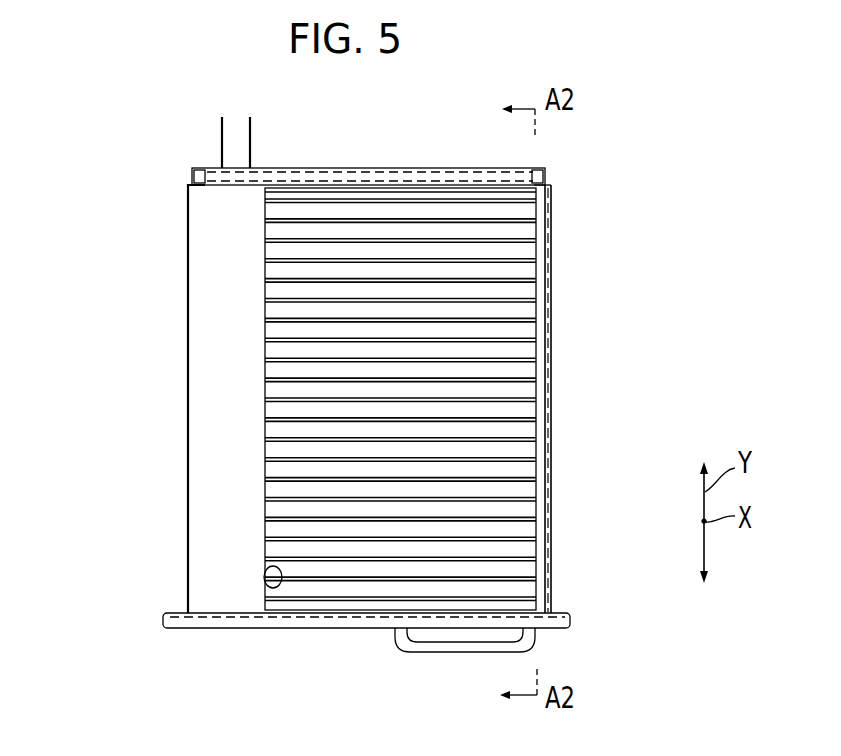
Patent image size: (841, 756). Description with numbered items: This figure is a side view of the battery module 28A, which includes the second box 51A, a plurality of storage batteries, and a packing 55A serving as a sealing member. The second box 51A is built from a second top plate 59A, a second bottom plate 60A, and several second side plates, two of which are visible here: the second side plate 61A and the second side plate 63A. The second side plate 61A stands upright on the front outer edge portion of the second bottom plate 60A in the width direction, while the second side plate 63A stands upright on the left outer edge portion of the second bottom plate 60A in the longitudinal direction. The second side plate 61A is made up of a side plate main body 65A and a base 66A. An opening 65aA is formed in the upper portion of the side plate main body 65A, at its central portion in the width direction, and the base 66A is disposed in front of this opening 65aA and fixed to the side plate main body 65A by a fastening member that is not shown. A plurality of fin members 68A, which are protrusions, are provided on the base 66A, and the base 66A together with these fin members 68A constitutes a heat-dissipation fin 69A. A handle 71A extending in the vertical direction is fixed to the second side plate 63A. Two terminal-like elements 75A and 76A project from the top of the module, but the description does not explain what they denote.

The battery module 28A is at (165, 165).
The second box 51A is at (563, 181).
The packing (sealing member) 55A is at (536, 172).
The second top plate 59A is at (551, 253).
The second bottom plate 60A is at (187, 313).
The second side plate 61A is at (100, 457).
The second side plate 63A is at (255, 629).
The side plate main body 65A is at (203, 478).
The opening 65aA is at (277, 585).
The base (side plate) 66A is at (278, 528).
The fin members (protrusions) 68A is at (537, 420).
The heat-dissipation fin 69A is at (606, 370).
The handle 71A is at (398, 648).
The positive terminal 75A is at (221, 133).
The negative terminal 76A is at (252, 133).